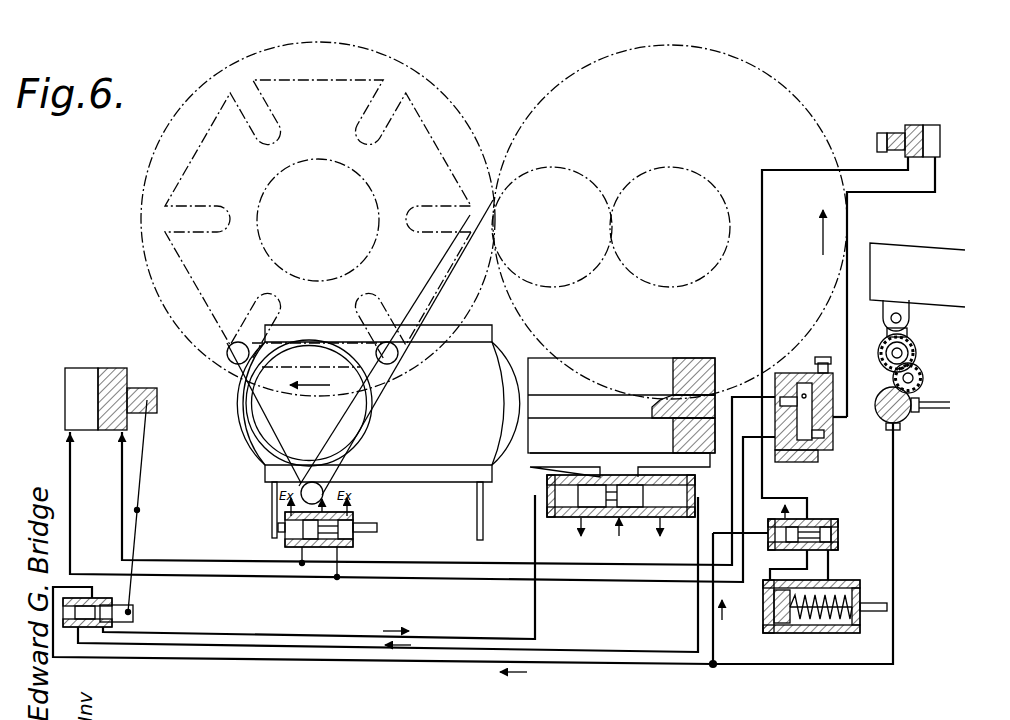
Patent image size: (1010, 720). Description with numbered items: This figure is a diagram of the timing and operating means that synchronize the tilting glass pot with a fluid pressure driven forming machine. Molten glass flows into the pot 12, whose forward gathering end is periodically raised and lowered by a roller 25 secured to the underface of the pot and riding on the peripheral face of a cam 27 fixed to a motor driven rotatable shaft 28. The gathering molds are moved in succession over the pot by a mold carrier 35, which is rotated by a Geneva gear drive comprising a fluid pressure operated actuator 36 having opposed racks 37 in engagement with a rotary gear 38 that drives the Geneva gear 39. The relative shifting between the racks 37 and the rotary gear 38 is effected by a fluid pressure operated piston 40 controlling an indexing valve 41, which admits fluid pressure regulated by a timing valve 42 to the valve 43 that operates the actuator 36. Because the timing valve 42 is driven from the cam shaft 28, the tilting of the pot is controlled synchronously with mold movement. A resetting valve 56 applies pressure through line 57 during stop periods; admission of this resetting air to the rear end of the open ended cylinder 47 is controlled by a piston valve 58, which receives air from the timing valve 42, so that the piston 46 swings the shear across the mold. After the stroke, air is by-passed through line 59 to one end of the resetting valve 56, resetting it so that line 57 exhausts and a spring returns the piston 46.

The pot 12 is at (950, 264).
The roller 25 is at (906, 319).
The cam 27 is at (888, 336).
The rotatable shaft 28 is at (912, 355).
The mold carrier 35 is at (725, 59).
The fluid pressure operated actuator 36 is at (674, 377).
The opposed racks 37 is at (450, 352).
The rotary gear 38 is at (366, 426).
The Geneva gear 39 is at (356, 301).
The fluid pressure operated piston 40 is at (108, 418).
The indexing valve 41 is at (135, 609).
The timing valve 42 is at (908, 414).
The valve 43 is at (571, 516).
The fluid pressure operated piston 46 is at (788, 656).
The open ended cylinder 47 is at (853, 656).
The resetting valve 56 is at (825, 453).
The resetting line 57 is at (816, 320).
The piston valve 58 is at (833, 521).
The by-pass line 59 is at (831, 576).